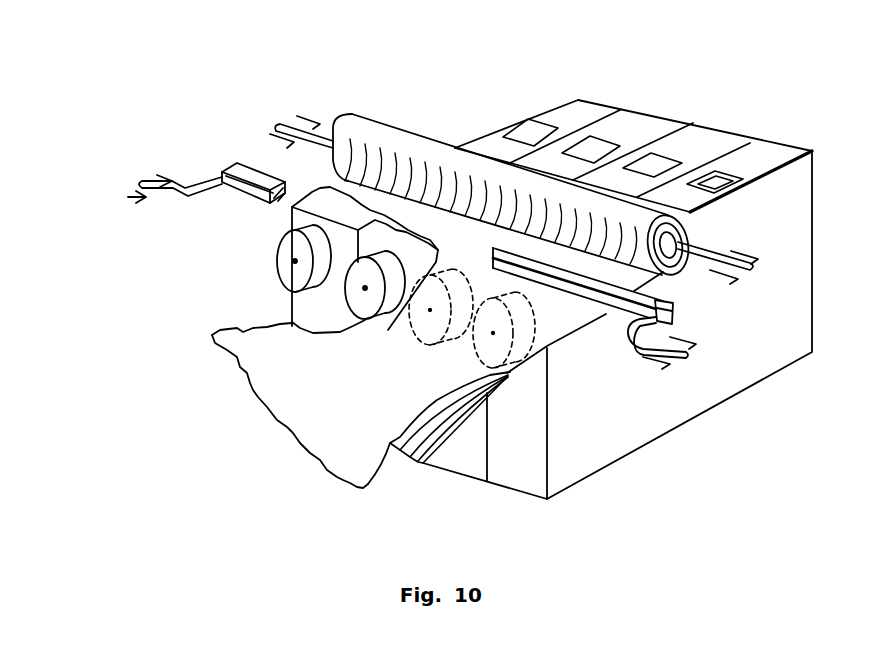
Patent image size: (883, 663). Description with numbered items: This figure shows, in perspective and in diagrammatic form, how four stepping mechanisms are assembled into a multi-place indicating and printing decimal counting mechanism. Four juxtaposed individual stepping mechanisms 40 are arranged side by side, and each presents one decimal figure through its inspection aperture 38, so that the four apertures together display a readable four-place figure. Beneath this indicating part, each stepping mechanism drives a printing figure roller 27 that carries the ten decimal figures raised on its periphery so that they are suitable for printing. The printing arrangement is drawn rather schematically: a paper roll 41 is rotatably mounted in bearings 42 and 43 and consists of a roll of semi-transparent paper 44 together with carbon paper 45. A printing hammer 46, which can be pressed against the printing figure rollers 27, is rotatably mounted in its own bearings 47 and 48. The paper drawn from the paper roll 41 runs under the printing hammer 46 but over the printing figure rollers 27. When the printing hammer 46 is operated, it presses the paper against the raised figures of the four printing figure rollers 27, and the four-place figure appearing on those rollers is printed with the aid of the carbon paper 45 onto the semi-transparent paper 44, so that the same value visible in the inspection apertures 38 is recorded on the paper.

The printing figure roller 27 is at (362, 300).
The inspection aperture 38 is at (605, 140).
The stepping mechanism 40 is at (660, 117).
The paper roll 41 is at (388, 125).
The bearing 42 is at (312, 128).
The bearing 43 is at (745, 258).
The semi-transparent paper 44 is at (345, 482).
The carbon paper 45 is at (425, 464).
The printing hammer 46 is at (242, 163).
The bearing 47 is at (140, 198).
The bearing 48 is at (698, 343).